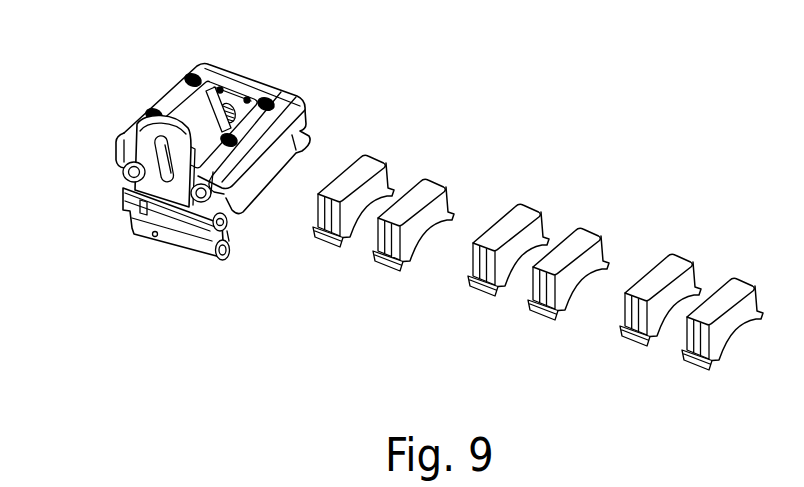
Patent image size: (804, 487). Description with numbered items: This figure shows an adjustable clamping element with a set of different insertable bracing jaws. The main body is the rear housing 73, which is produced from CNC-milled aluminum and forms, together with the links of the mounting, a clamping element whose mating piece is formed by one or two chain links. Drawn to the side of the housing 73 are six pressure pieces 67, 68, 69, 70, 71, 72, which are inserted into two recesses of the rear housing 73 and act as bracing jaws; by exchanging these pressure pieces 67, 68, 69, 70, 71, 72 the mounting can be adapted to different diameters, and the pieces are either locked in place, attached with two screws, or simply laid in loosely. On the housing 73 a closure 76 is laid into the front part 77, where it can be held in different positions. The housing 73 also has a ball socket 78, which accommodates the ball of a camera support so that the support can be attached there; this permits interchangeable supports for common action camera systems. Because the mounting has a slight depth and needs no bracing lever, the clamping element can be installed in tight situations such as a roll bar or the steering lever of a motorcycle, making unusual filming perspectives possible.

The pressure piece 67 is at (320, 250).
The pressure piece 68 is at (382, 272).
The pressure piece 69 is at (475, 300).
The pressure piece 70 is at (538, 322).
The pressure piece 71 is at (628, 352).
The pressure piece 72 is at (690, 372).
The rear housing 73 is at (285, 110).
The closure 76 is at (155, 177).
The front part 77 is at (126, 152).
The ball socket 78 is at (198, 118).